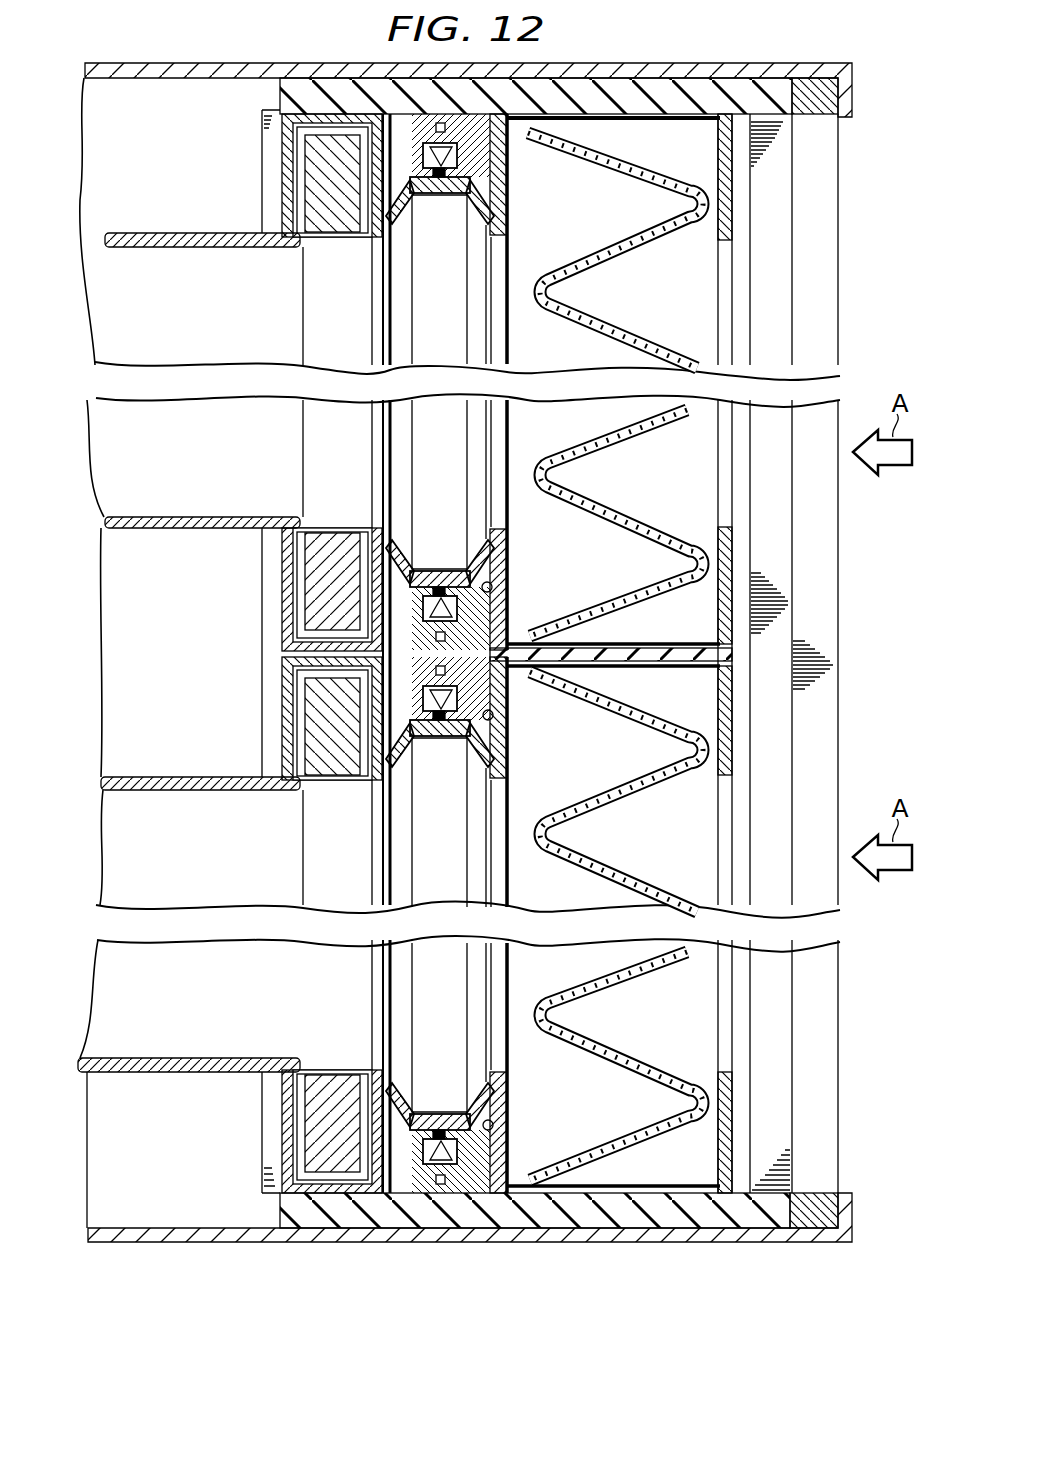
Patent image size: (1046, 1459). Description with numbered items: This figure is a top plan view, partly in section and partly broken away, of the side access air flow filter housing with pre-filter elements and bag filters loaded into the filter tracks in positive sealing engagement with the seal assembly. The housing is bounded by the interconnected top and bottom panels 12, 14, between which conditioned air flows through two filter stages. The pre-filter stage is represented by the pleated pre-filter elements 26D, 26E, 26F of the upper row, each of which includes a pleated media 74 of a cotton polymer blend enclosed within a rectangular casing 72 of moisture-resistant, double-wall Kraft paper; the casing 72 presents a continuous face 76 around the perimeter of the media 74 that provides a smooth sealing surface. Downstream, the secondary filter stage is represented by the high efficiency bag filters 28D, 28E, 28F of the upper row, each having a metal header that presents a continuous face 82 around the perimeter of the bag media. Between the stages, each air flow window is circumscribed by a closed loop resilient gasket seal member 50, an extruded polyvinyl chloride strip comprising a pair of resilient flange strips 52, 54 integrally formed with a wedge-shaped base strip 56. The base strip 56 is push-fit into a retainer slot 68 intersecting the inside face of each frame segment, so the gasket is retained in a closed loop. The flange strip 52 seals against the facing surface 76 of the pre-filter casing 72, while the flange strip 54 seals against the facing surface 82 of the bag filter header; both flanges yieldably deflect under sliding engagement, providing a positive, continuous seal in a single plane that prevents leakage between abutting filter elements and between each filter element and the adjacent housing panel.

The top panel 12 is at (722, 65).
The bottom panel 14 is at (650, 1244).
The pleated pre-filter element 26D is at (697, 803).
The pleated pre-filter element 26E is at (697, 488).
The pleated pre-filter element 26F is at (697, 292).
The bag filter 28D is at (115, 845).
The bag filter 28E is at (115, 497).
The bag filter 28F is at (115, 287).
The gasket seal member 50 is at (389, 292).
The resilient flange strip 52 is at (493, 205).
The resilient flange strip 54 is at (412, 213).
The wedge-shaped base strip 56 is at (457, 150).
The retainer slot 68 is at (430, 150).
The rectangular casing 72 is at (733, 187).
The pleated media 74 is at (610, 327).
The continuous face 76 is at (492, 585).
The continuous face 82 is at (392, 199).